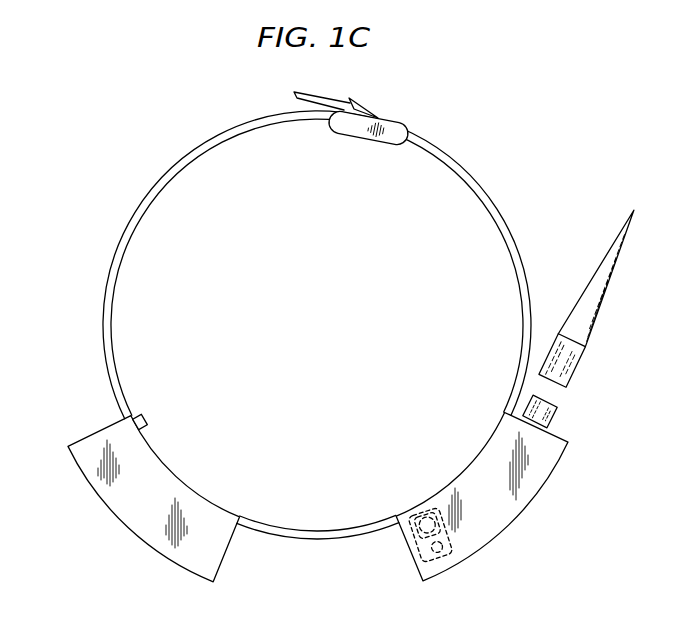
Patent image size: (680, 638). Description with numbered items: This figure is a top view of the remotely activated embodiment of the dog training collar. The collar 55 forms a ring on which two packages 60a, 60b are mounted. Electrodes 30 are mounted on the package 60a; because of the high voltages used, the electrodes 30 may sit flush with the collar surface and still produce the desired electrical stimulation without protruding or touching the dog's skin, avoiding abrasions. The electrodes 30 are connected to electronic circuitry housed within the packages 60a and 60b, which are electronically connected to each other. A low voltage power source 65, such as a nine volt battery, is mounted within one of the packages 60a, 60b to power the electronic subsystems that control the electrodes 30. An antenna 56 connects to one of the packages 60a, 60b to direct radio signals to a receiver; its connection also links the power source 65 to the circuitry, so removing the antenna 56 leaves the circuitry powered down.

The circular band 55 is at (512, 242).
The antenna 56 is at (603, 290).
The electrodes 30 is at (148, 420).
The package 60a is at (113, 522).
The package 60b is at (513, 525).
The low voltage power source 65 is at (412, 542).